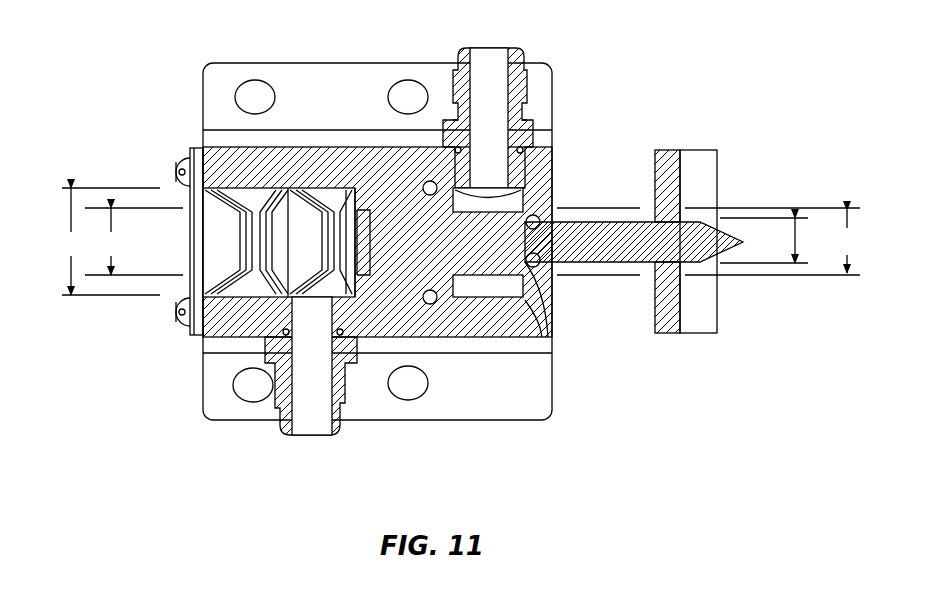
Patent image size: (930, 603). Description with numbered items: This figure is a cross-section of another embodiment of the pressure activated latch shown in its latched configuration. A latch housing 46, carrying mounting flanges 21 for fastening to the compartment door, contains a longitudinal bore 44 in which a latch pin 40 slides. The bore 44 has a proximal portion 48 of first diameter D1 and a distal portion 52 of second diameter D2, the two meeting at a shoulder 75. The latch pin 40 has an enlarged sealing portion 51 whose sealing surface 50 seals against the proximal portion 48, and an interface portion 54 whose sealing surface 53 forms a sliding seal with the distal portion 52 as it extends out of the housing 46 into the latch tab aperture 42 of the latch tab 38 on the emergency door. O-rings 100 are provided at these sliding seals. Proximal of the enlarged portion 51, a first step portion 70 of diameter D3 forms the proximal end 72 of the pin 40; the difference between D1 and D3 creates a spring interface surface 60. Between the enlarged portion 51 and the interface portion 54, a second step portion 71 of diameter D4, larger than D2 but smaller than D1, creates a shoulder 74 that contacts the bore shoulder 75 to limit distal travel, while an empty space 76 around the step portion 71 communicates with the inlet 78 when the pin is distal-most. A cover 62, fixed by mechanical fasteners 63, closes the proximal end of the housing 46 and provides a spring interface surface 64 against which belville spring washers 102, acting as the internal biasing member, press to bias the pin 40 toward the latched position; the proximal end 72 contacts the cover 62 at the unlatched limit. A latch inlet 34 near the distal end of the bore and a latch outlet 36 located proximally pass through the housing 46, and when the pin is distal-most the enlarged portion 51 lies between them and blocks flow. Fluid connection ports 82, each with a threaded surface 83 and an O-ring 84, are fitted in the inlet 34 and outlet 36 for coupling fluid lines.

The mounting flange 21 is at (315, 62).
The latch housing 46 is at (360, 160).
The latch outlet 36 is at (270, 318).
The spring interface surface 64 is at (242, 200).
The proximal end 72 is at (320, 215).
The fluid connection port 82 is at (535, 68).
The sealing surface 50 is at (413, 185).
The enlarged sealing portion 51 is at (460, 185).
The O-ring 84 is at (540, 147).
The threaded surface 83 is at (528, 175).
The distal portion 52 is at (552, 210).
The latch inlet 34 is at (552, 190).
The spring interface surface 60 is at (400, 335).
The first step portion 70 is at (373, 335).
The inlet 78 is at (455, 335).
The empty space 76 is at (492, 335).
The shoulder 74 is at (550, 340).
The shoulder 75 is at (525, 345).
The second step portion 71 is at (550, 408).
The sealing surface 53 is at (617, 220).
The latch pin 40 is at (738, 246).
The latch tab aperture 42 is at (680, 262).
The latch tab 38 is at (680, 175).
The interface portion 54 is at (607, 287).
The O-ring 100 is at (552, 272).
The second diameter D2 is at (795, 218).
The diameter of second step portion D4 is at (848, 241).
The first diameter D1 is at (109, 241).
The outer diameter of first step portion D3 is at (134, 241).
The cover 62 is at (208, 216).
The mechanical fastener 63 is at (175, 165).
The proximal portion 48 is at (172, 310).
The bore 44 is at (188, 240).
The belville spring washer 102 is at (200, 305).